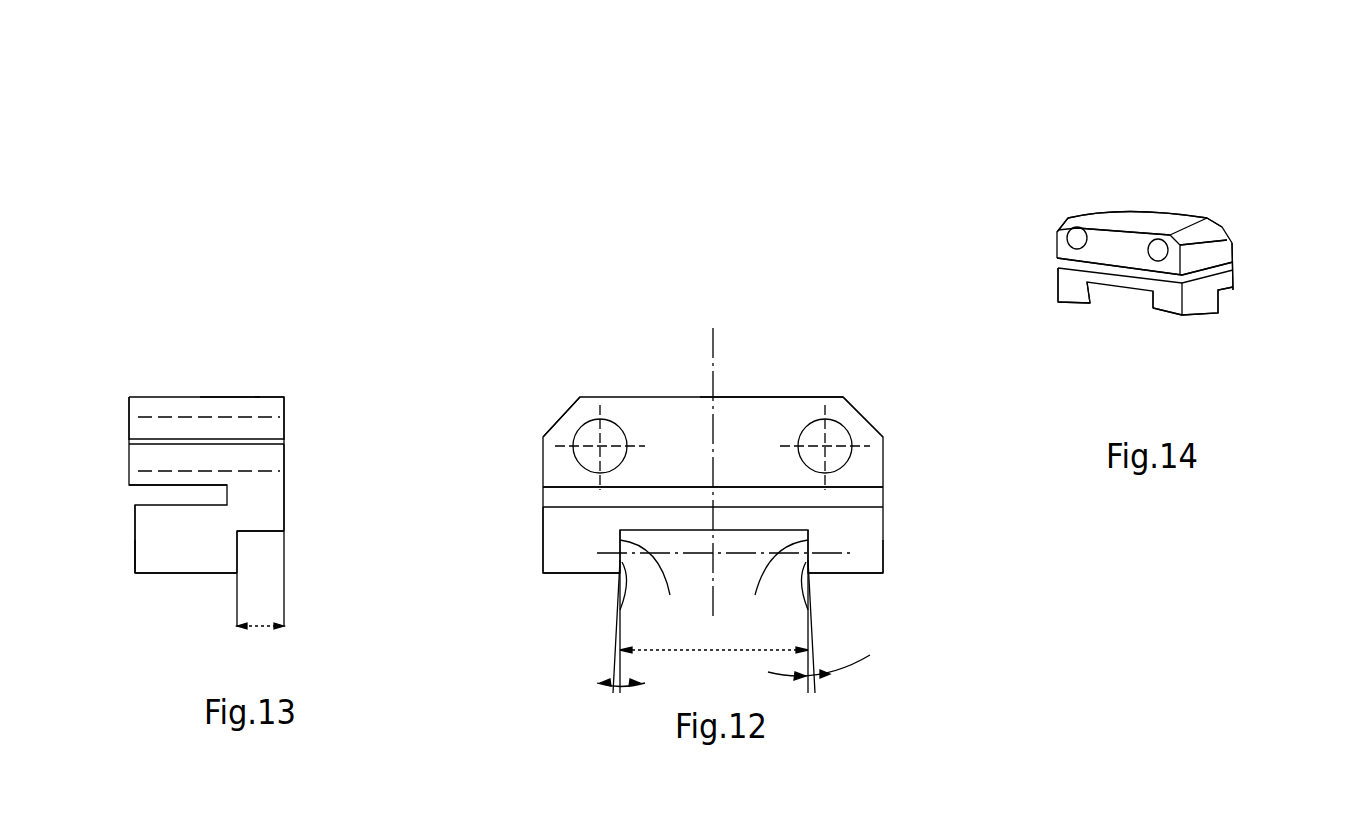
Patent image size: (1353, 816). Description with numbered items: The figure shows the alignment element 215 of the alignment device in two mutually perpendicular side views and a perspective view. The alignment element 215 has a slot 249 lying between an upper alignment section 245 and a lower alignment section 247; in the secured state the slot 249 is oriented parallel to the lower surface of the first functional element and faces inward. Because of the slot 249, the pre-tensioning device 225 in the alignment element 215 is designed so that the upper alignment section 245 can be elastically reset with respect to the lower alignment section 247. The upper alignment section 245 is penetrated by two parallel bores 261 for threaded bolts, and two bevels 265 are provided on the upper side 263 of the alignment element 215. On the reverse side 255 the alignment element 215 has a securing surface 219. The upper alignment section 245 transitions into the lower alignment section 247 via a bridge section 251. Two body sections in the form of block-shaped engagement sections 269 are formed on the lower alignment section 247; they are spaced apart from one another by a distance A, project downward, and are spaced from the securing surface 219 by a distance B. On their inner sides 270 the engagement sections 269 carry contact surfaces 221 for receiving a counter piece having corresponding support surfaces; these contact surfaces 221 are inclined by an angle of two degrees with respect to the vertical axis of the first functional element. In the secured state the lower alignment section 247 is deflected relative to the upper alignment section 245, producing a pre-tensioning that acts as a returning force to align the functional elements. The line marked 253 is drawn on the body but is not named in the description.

In FIG. 13, the alignment element 215 is at (300, 376).
In FIG. 12, the alignment element 215 is at (790, 353).
In FIG. 14, the alignment element 215 is at (1232, 212).
In FIG. 13, the securing surface 219 is at (285, 413).
In FIG. 14, the securing surface 219 is at (1203, 218).
In FIG. 12, the contact surfaces 221 is at (623, 562).
In FIG. 14, the contact surfaces 221 is at (1153, 300).
In FIG. 13, the pre-tensioning device 225 is at (131, 544).
In FIG. 14, the pre-tensioning device 225 is at (1212, 270).
In FIG. 13, the upper alignment section 245 is at (237, 397).
In FIG. 12, the upper alignment section 245 is at (733, 397).
In FIG. 14, the upper alignment section 245 is at (1143, 218).
In FIG. 13, the lower alignment section 247 is at (135, 562).
In FIG. 12, the lower alignment section 247 is at (543, 545).
In FIG. 14, the lower alignment section 247 is at (1055, 285).
In FIG. 13, the slot 249 is at (143, 493).
In FIG. 12, the slot 249 is at (545, 500).
In FIG. 14, the slot 249 is at (1078, 263).
In FIG. 13, the bridge section 251 is at (238, 520).
In FIG. 14, the bridge section 251 is at (1222, 294).
In FIG. 12, the shoulder line 253 is at (884, 494).
In FIG. 13, the reverse side 255 is at (287, 494).
In FIG. 14, the reverse side 255 is at (1235, 256).
In FIG. 12, the bores 261 is at (593, 437).
In FIG. 14, the bores 261 is at (1065, 228).
In FIG. 13, the upper side 263 is at (262, 397).
In FIG. 12, the upper side 263 is at (772, 397).
In FIG. 14, the upper side 263 is at (1117, 213).
In FIG. 13, the bevels 265 is at (143, 408).
In FIG. 12, the bevels 265 is at (557, 420).
In FIG. 14, the bevels 265 is at (1062, 230).
In FIG. 13, the engagement sections 269 is at (170, 573).
In FIG. 12, the engagement sections 269 is at (580, 573).
In FIG. 14, the engagement sections 269 is at (1067, 304).
In FIG. 12, the inner sides 270 is at (714, 578).